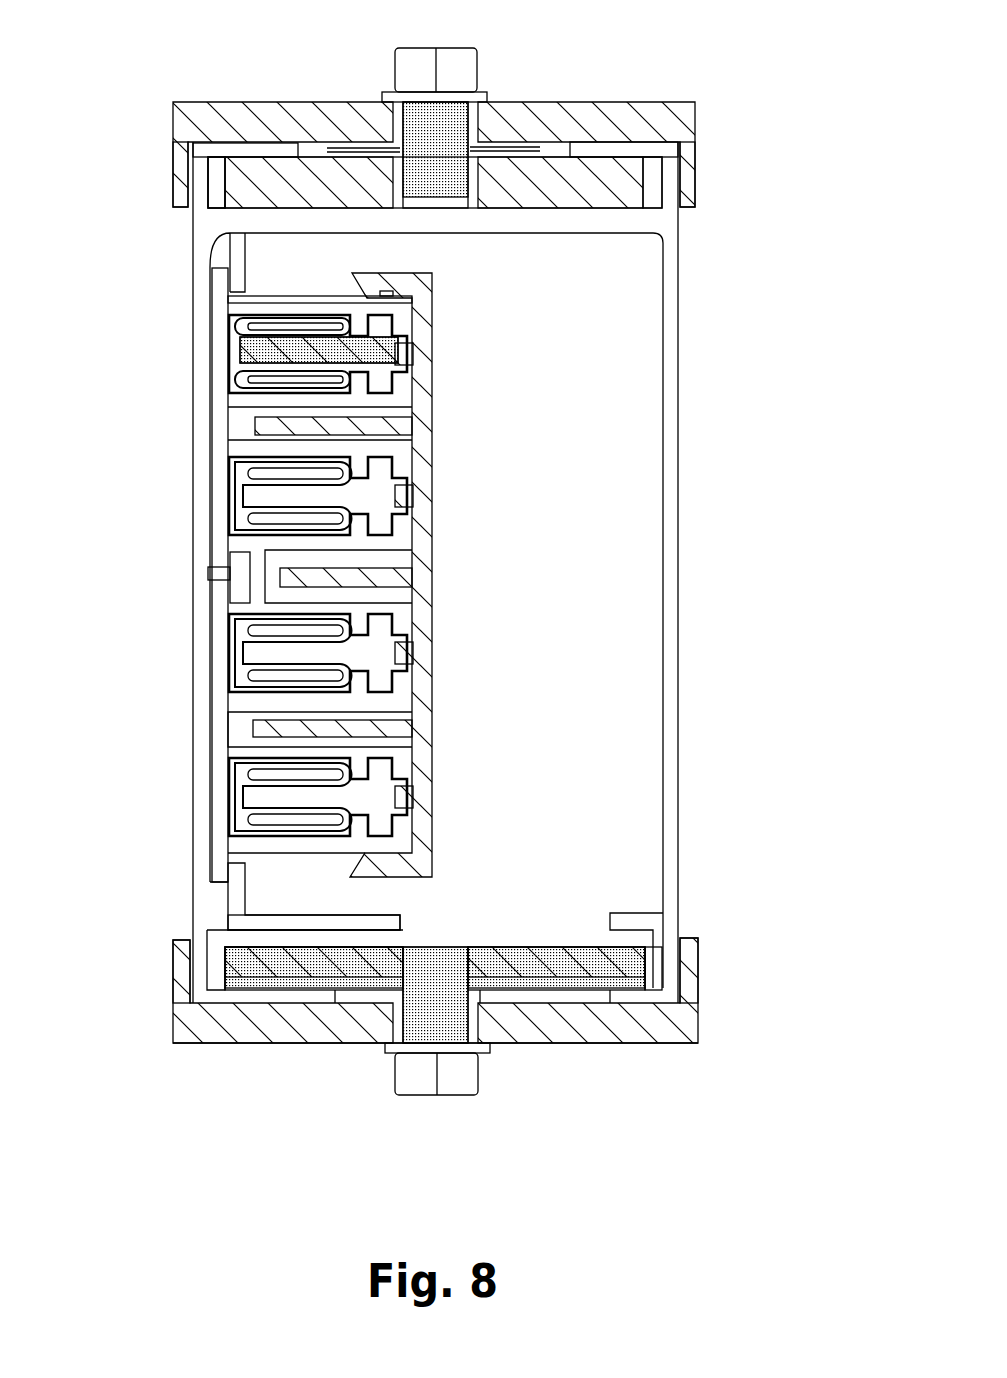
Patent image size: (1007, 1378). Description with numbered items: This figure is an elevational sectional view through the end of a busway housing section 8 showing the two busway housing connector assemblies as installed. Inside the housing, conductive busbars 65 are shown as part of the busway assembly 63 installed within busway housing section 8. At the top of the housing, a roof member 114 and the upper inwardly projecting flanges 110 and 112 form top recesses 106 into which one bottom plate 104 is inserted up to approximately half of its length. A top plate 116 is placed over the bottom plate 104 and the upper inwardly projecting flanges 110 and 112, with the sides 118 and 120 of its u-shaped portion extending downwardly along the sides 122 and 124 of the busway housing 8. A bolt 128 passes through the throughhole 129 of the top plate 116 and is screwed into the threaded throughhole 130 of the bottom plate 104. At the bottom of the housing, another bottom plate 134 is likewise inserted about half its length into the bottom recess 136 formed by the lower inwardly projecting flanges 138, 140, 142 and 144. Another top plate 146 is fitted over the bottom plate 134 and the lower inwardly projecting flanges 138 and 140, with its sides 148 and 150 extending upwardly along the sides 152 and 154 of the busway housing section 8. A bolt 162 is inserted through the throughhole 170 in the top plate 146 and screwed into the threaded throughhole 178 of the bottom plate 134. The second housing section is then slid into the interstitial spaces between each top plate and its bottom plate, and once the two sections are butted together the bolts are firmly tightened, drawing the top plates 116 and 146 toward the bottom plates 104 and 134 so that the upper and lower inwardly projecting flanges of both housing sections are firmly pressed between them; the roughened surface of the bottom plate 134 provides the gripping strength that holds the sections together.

The busway housing section 8 is at (818, 648).
The busway assembly 63 is at (482, 530).
The conductive busbars 65 is at (232, 353).
The bottom plate 104 is at (612, 200).
The top recesses 106 is at (215, 200).
The upper inwardly projecting flange 110 is at (278, 148).
The upper inwardly projecting flange 112 is at (607, 148).
The roof member 114 is at (550, 228).
The top plate 116 is at (210, 100).
The side of top plate 118 is at (173, 132).
The side of top plate 120 is at (700, 155).
The side of busway housing 122 is at (200, 187).
The side of busway housing 124 is at (692, 186).
The bolt 128 is at (478, 72).
The throughhole 129 is at (395, 120).
The threaded throughhole 130 is at (398, 208).
The bottom plate 134 is at (207, 935).
The bottom recess 136 is at (215, 990).
The lower inwardly projecting flange 138 is at (268, 992).
The lower inwardly projecting flange 140 is at (632, 992).
The lower inwardly projecting flange 142 is at (405, 922).
The lower inwardly projecting flange 144 is at (628, 912).
The top plate 146 is at (550, 1043).
The side of top plate 148 is at (173, 1010).
The side of top plate 150 is at (700, 1015).
The side of busway housing 152 is at (196, 957).
The side of busway housing 154 is at (680, 968).
The bolt 162 is at (410, 1097).
The throughhole 170 is at (402, 1023).
The threaded throughhole 178 is at (475, 962).